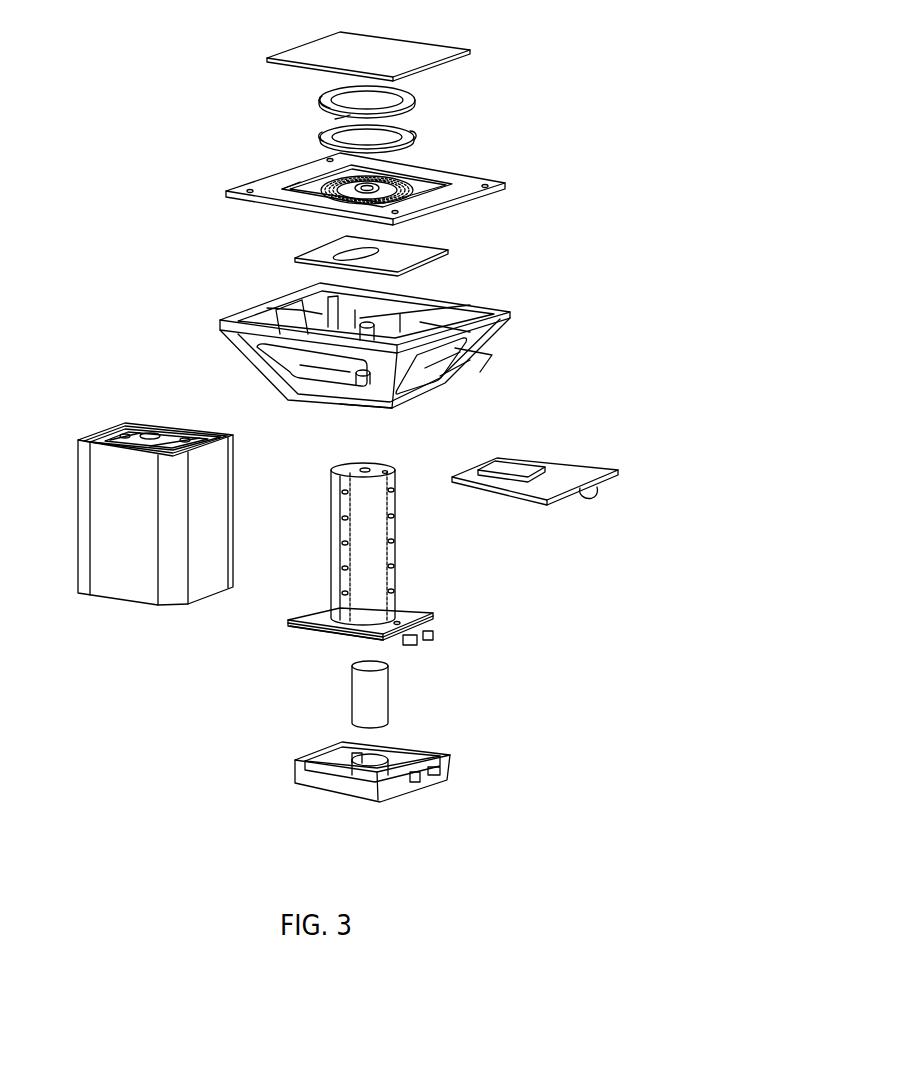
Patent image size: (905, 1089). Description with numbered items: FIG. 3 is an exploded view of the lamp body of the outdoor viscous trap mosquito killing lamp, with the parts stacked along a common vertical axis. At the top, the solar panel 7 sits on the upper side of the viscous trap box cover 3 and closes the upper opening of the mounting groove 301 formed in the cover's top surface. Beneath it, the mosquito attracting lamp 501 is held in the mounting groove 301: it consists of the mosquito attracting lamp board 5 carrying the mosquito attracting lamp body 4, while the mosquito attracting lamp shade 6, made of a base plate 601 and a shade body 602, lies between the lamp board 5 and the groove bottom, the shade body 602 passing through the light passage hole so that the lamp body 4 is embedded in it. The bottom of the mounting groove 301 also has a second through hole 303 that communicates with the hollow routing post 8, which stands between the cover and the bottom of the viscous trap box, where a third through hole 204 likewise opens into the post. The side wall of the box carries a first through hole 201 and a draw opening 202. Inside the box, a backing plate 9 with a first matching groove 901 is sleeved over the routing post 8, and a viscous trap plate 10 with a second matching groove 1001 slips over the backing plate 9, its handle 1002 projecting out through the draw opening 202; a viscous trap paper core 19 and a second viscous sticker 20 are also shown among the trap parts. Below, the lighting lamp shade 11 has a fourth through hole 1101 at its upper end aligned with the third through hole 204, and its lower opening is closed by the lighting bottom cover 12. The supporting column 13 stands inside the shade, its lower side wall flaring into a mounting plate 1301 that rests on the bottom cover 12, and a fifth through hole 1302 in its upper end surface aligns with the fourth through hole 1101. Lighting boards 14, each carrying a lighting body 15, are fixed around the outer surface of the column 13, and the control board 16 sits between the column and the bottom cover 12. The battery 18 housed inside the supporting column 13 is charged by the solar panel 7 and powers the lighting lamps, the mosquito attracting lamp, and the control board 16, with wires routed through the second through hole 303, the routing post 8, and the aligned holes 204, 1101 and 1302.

The viscous trap box cover 3 is at (368, 184).
The mosquito attracting lamp body 4 is at (412, 103).
The mosquito attracting lamp board 5 is at (322, 104).
The mosquito attracting lamp shade 6 is at (413, 138).
The solar panel 7 is at (397, 48).
The routing post 8 is at (377, 363).
The backing plate 9 is at (359, 245).
The viscous trap plate 10 is at (545, 470).
The lighting lamp shade 11 is at (117, 464).
The lighting bottom cover 12 is at (452, 772).
The supporting column 13 is at (393, 554).
The lighting board 14 is at (345, 553).
The lighting body 15 is at (342, 593).
The control board 16 is at (322, 633).
The battery 18 is at (385, 687).
The viscous trap paper core 19 is at (320, 318).
The second viscous sticker 20 is at (267, 308).
The first through hole 201 is at (492, 355).
The draw opening 202 is at (473, 385).
The third through hole 204 is at (365, 398).
The mounting groove 301 is at (305, 182).
The second through hole 303 is at (330, 192).
The mosquito attracting lamp 501 is at (336, 120).
The base plate 601 is at (412, 131).
The shade body 602 is at (322, 135).
The first matching groove 901 is at (338, 250).
The second matching groove 1001 is at (505, 472).
The handle 1002 is at (588, 492).
The fourth through hole 1101 is at (153, 421).
The mounting plate 1301 is at (432, 612).
The fifth through hole 1302 is at (368, 470).